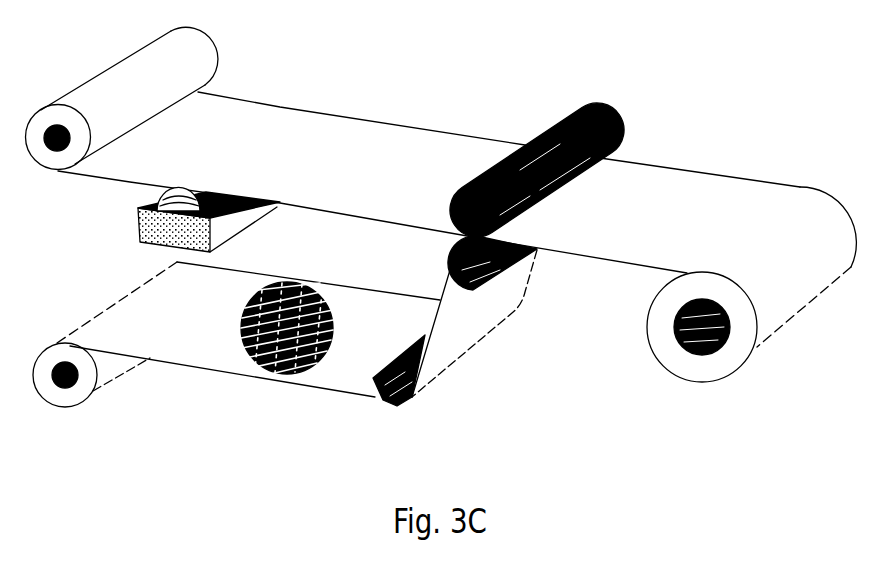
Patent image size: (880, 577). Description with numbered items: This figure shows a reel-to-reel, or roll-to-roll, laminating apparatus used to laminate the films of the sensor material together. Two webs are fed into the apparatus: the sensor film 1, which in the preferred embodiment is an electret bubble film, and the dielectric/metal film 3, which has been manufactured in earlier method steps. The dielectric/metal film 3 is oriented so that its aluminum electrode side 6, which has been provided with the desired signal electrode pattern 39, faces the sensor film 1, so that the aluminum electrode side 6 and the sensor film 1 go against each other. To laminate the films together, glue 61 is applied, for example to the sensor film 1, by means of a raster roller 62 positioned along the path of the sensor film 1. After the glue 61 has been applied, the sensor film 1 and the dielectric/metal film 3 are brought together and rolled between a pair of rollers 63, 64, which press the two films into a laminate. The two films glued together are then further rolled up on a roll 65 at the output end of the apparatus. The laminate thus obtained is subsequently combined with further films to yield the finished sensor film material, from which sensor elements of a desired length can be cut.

The sensor film 1 is at (345, 133).
The dielectric/metal film 3 is at (191, 345).
The aluminum electrode side 6 is at (151, 346).
The signal electrode pattern 39 is at (287, 368).
The glue 61 is at (222, 193).
The raster roller 62 is at (153, 203).
The roller 63 is at (490, 287).
The roller 64 is at (486, 178).
The roll 65 is at (746, 339).